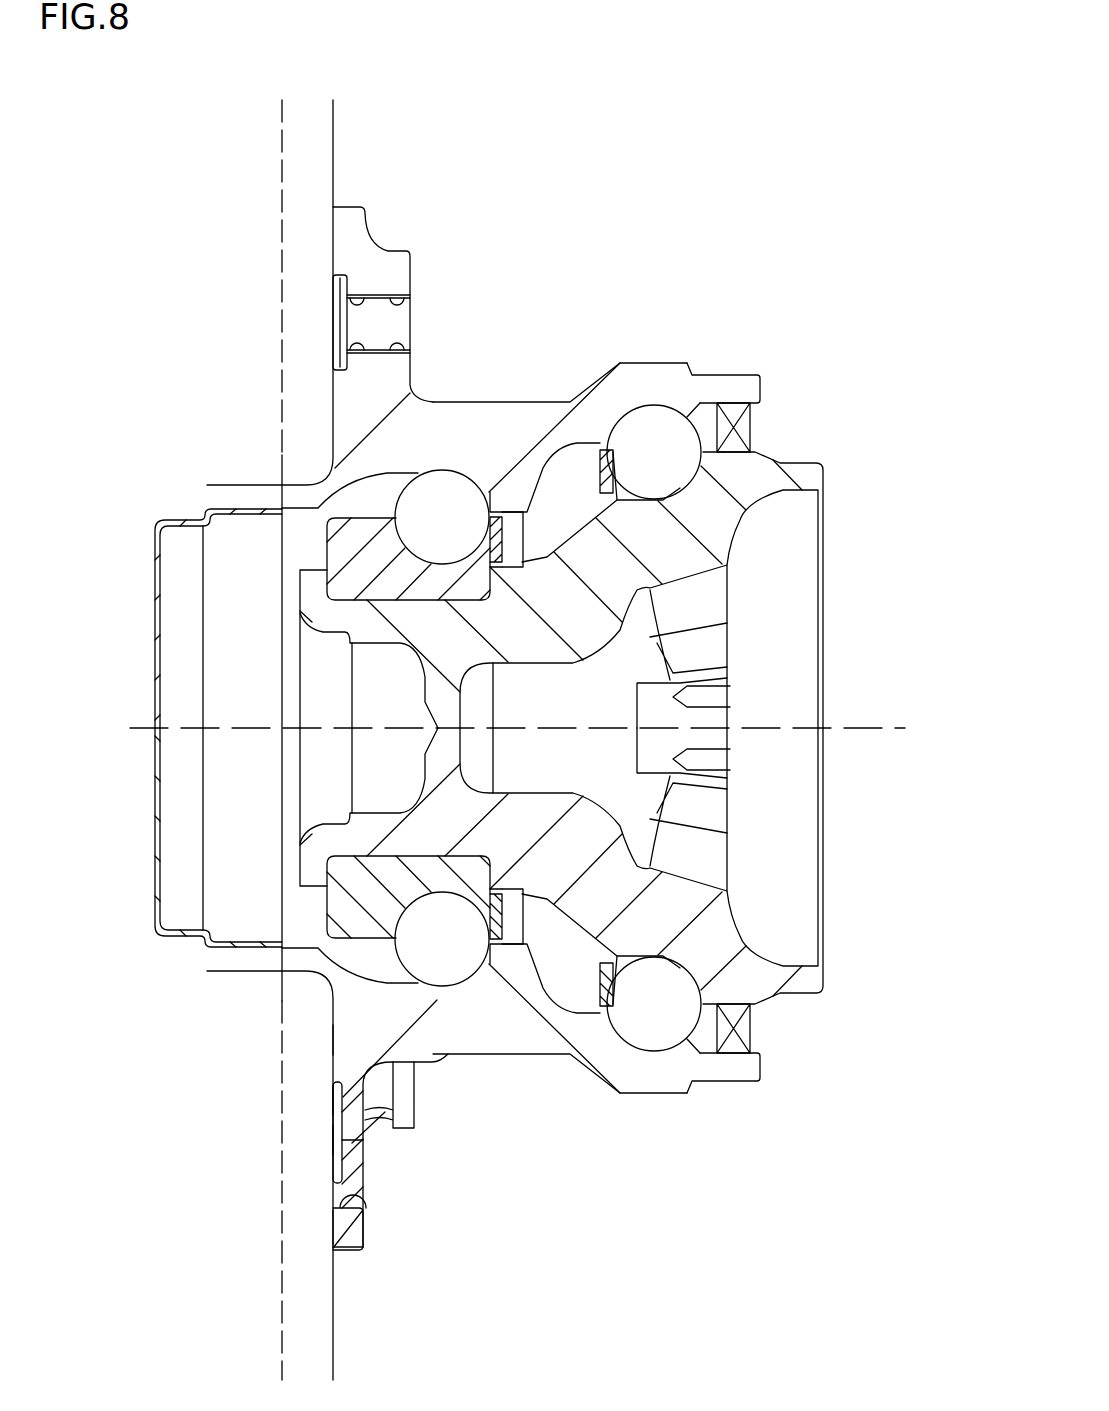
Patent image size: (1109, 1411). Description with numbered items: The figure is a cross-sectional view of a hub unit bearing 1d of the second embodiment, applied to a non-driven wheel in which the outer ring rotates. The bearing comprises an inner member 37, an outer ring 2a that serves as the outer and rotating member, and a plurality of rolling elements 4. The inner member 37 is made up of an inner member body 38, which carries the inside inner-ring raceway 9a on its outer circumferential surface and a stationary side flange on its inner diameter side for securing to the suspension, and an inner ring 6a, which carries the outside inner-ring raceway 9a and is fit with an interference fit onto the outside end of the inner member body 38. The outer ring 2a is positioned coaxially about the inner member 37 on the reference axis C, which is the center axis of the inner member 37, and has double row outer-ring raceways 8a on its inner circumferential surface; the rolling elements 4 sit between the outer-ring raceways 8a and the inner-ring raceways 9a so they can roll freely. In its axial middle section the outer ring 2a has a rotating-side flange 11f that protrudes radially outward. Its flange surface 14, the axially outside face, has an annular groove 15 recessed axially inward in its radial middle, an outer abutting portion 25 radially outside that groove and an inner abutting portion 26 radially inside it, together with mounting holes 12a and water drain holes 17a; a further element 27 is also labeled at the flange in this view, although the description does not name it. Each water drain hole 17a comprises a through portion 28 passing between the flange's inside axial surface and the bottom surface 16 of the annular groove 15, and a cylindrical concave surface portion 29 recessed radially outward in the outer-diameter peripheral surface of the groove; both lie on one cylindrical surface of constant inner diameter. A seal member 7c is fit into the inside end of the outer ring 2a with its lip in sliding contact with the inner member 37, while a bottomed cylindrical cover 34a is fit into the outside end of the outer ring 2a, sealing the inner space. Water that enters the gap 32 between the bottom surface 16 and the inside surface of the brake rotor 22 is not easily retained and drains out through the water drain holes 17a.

The hub unit bearing 1d is at (786, 356).
The outer ring 2a is at (545, 418).
The rolling elements 4 is at (445, 490).
The inner ring 6a is at (340, 560).
The seal member 7c is at (745, 428).
The outer-ring raceways 8a is at (600, 1000).
The inner-ring raceways 9a is at (437, 1000).
The rotating-side flange 11f is at (380, 263).
The mounting holes 12a is at (345, 308).
The flange surface 14 is at (235, 1133).
The annular groove 15 is at (333, 1104).
The bottom surface 16 is at (333, 1124).
The water drain holes 17a is at (424, 1184).
The brake rotor 22 is at (308, 135).
The outer abutting portion 25 is at (254, 1215).
The inner abutting portion 26 is at (333, 1044).
The threaded portion 27 is at (403, 307).
The through portion 28 is at (353, 1143).
The concave surface portion 29 is at (365, 1143).
The gap 32 is at (340, 342).
The cover 34a is at (157, 800).
The inner member 37 is at (712, 537).
The inner member body 38 is at (710, 916).
The reference axis C is at (860, 727).